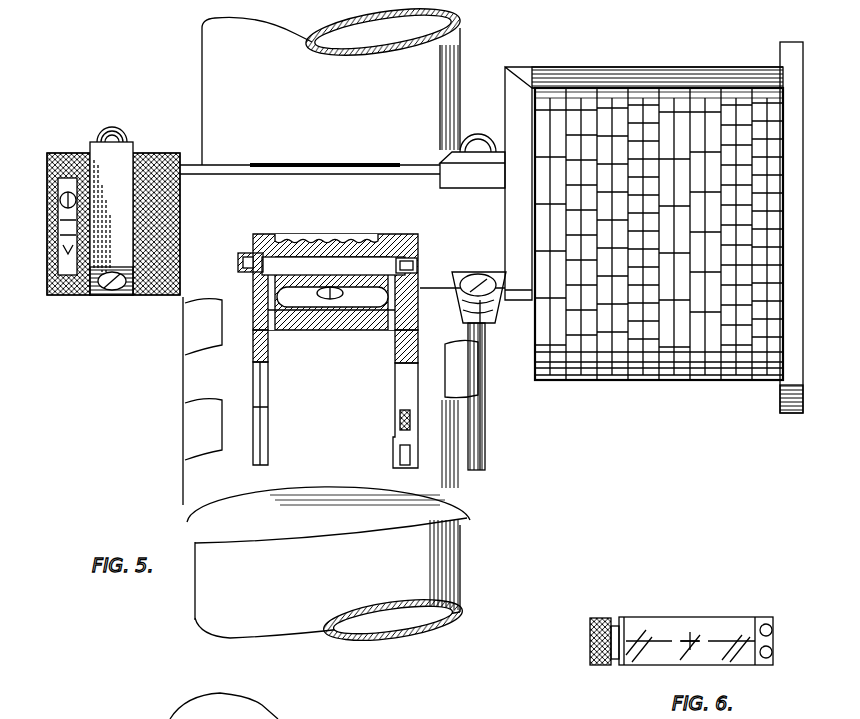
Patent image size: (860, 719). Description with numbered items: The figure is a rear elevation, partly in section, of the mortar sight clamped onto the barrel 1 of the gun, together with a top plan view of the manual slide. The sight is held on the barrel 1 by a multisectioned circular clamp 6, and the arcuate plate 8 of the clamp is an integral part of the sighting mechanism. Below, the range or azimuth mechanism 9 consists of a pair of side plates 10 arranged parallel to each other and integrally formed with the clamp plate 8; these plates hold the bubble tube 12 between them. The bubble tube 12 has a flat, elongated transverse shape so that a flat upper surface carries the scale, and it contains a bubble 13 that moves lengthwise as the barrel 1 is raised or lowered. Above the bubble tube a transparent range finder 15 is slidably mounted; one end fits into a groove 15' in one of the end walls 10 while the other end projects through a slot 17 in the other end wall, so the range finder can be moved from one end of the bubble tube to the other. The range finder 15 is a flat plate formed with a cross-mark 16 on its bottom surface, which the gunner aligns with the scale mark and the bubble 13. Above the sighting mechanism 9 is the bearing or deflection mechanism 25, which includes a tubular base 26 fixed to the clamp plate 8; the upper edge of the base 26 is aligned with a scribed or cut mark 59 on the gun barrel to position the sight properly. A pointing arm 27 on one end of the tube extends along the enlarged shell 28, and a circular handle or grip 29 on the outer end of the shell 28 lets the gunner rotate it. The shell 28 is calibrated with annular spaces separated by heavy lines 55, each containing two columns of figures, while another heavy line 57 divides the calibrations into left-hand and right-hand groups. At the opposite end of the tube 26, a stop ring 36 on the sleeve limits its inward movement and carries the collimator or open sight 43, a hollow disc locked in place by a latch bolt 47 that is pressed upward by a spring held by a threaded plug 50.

In FIG. 5, the barrel 1 is at (433, 587).
In FIG. 5, the multisectioned circular clamp 6 is at (193, 368).
In FIG. 5, the arcuate plate 8 is at (450, 337).
In FIG. 5, the range or azimuth mechanism 9 is at (423, 389).
In FIG. 5, the side plates 10 is at (258, 328).
In FIG. 5, the bubble tube 12 is at (358, 318).
In FIG. 5, the bubble 13 is at (315, 322).
In FIG. 5, the range finder 15 is at (354, 251).
In FIG. 6, the range finder 15 is at (681, 627).
In FIG. 5, the groove 15' is at (423, 261).
In FIG. 6, the cross-mark 16 is at (692, 628).
In FIG. 5, the slot 17 is at (262, 232).
In FIG. 5, the bearing or deflection mechanism 25 is at (493, 76).
In FIG. 5, the tubular base 26 is at (335, 264).
In FIG. 5, the pointing arm 27 is at (676, 80).
In FIG. 5, the enlarged shell 28 is at (720, 381).
In FIG. 5, the circular handle or grip 29 is at (790, 405).
In FIG. 5, the stop ring 36 is at (120, 160).
In FIG. 5, the collimator or open sight 43 is at (70, 297).
In FIG. 5, the latch bolt 47 is at (118, 124).
In FIG. 5, the threaded plug 50 is at (122, 290).
In FIG. 5, the heavy lines 55 is at (628, 381).
In FIG. 5, the heavy line 57 is at (660, 381).
In FIG. 5, the scribed or cut mark 59 is at (375, 165).